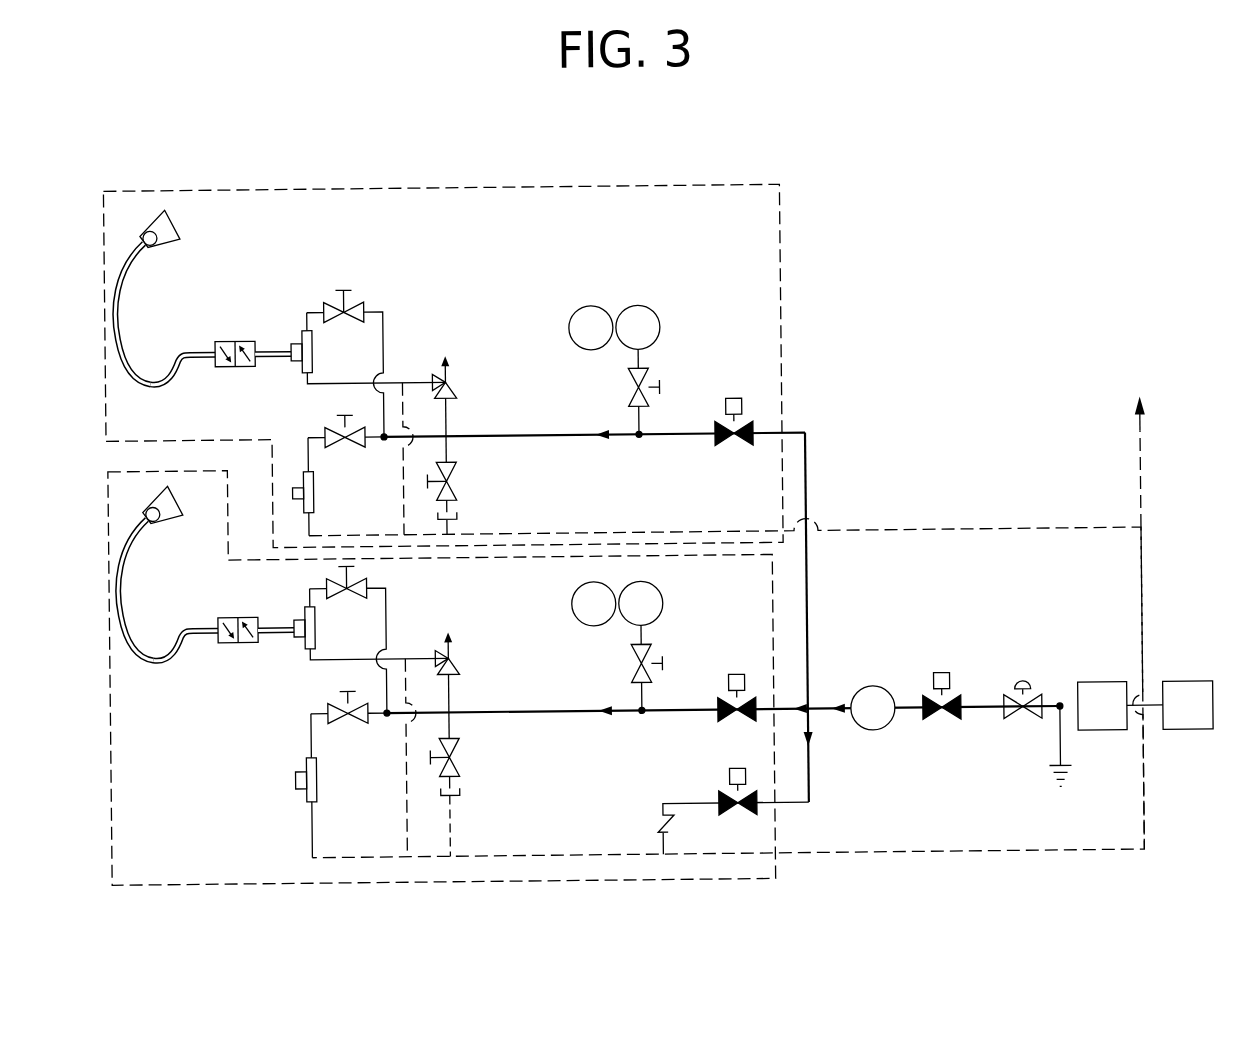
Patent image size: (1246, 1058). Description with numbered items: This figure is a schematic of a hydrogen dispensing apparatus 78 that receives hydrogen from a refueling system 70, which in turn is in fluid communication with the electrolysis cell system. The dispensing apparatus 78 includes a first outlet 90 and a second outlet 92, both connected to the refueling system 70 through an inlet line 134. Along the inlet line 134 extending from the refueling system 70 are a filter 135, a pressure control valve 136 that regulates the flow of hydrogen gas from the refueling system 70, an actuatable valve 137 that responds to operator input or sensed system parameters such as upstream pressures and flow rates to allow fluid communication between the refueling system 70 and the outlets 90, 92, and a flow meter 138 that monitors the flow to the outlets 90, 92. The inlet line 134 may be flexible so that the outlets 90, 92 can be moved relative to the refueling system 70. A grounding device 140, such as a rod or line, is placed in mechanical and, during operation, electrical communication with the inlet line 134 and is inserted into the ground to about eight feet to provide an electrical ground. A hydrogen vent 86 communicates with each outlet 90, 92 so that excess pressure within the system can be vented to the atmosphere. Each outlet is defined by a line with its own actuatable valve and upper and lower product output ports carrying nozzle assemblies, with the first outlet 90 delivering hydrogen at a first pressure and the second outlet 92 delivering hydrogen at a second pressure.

The refueling system 70 is at (1190, 686).
The dispensing apparatus 78 is at (932, 182).
The hydrogen vent 86 is at (1138, 441).
The first outlet 90 is at (653, 178).
The second outlet 92 is at (782, 620).
The inlet line 134 is at (985, 699).
The filter 135 is at (1102, 686).
The pressure control valve 136 is at (1026, 723).
The actuatable valve 137 is at (936, 723).
The flow meter 138 is at (868, 688).
The grounding device 140 is at (1055, 757).